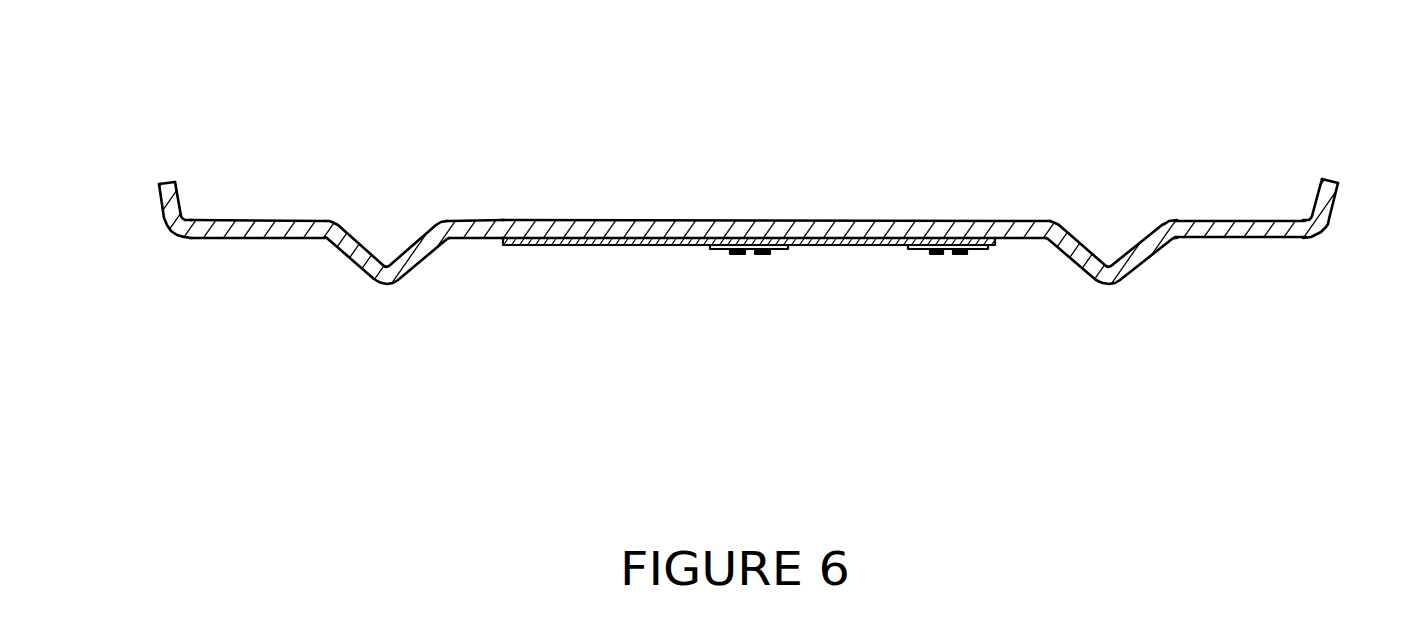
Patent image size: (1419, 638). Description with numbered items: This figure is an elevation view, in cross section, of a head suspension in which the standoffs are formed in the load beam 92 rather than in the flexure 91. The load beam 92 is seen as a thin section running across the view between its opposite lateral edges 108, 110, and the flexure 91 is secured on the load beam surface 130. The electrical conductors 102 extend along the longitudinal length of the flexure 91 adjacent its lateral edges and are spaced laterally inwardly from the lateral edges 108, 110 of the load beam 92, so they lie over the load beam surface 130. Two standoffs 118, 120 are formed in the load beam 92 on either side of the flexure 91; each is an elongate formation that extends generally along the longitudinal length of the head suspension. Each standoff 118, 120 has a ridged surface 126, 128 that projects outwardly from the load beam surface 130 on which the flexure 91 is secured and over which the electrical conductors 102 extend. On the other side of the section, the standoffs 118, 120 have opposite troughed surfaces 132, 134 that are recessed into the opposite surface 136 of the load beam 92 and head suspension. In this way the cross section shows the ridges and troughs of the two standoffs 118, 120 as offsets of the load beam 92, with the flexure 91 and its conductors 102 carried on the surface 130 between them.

The flexure 91 is at (852, 262).
The load beam 92 is at (739, 257).
The electrical conductors 102 is at (762, 254).
The lateral edge of the load beam 108 is at (1337, 200).
The lateral edge of the load beam 110 is at (167, 203).
The standoff 118 is at (1153, 298).
The standoff 120 is at (309, 310).
The ridged surface 126 is at (1166, 349).
The ridged surface 128 is at (388, 286).
The load beam surface 130 is at (474, 240).
The troughed surface 132 is at (1166, 259).
The troughed surface 134 is at (387, 274).
The opposite surface of the load beam 136 is at (765, 220).